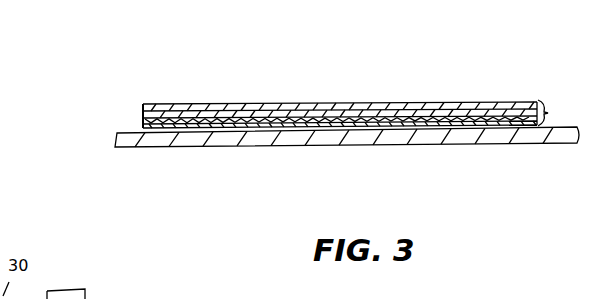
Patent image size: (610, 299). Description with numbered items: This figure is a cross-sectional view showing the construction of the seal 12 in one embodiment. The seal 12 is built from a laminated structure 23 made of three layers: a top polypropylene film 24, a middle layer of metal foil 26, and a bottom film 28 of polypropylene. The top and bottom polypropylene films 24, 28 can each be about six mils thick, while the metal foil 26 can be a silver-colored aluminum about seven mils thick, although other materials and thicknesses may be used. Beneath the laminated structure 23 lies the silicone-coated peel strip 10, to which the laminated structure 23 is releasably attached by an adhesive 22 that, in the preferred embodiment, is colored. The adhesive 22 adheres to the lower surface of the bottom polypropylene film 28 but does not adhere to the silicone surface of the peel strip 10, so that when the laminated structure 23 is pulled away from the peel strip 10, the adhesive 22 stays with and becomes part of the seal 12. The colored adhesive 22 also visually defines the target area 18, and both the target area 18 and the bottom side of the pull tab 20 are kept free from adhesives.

The peel strip 10 is at (116, 141).
The seal 12 is at (318, 103).
The target area 18 is at (277, 127).
The pull tab 20 is at (493, 128).
The adhesive 22 is at (143, 128).
The laminated structure 23 is at (548, 113).
The top polypropylene film 24 is at (142, 106).
The metal foil 26 is at (143, 118).
The bottom film 28 is at (143, 124).